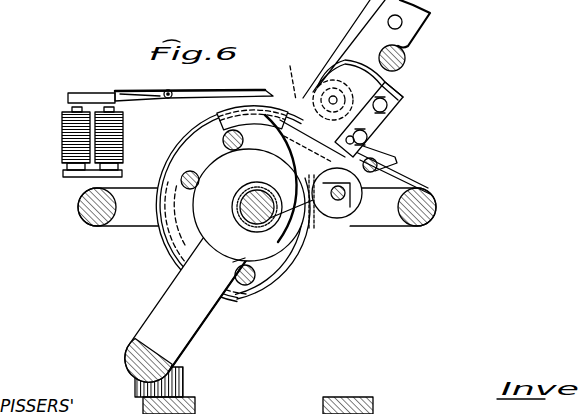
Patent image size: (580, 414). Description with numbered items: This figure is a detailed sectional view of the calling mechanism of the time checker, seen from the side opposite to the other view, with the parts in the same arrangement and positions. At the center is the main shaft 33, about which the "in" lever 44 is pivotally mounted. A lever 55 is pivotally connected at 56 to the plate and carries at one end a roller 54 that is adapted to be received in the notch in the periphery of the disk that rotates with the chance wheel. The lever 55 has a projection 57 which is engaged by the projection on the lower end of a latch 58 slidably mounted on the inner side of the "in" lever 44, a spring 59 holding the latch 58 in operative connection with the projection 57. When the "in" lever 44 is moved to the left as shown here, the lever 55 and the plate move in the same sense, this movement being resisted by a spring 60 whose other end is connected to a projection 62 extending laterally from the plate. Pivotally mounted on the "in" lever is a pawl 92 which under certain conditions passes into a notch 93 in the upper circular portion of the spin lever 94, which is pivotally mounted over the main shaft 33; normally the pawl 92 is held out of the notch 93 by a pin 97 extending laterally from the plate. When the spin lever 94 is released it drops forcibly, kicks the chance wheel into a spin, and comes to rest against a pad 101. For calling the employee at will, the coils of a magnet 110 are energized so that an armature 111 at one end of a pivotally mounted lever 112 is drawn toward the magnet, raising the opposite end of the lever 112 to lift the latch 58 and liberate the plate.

The main shaft 33 is at (280, 232).
The "in" lever 44 is at (420, 17).
The roller 54 is at (233, 150).
The lever 55 is at (272, 137).
The pivotal connection 56 is at (356, 212).
The projection 57 is at (332, 152).
The latch 58 is at (385, 125).
The spring 59 is at (340, 60).
The spring 60 is at (294, 272).
The projection 62 is at (250, 287).
The pawl 92 is at (385, 158).
The notch 93 is at (293, 74).
The spin lever 94 is at (203, 320).
The pin 97 is at (398, 180).
The pad 101 is at (184, 380).
The magnet 110 is at (103, 143).
The armature 111 is at (85, 98).
The lever 112 is at (160, 100).